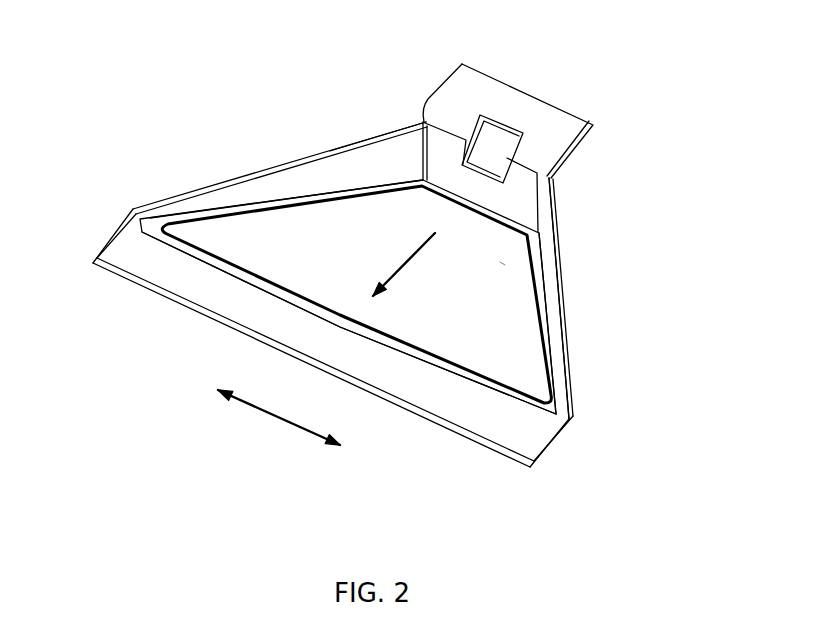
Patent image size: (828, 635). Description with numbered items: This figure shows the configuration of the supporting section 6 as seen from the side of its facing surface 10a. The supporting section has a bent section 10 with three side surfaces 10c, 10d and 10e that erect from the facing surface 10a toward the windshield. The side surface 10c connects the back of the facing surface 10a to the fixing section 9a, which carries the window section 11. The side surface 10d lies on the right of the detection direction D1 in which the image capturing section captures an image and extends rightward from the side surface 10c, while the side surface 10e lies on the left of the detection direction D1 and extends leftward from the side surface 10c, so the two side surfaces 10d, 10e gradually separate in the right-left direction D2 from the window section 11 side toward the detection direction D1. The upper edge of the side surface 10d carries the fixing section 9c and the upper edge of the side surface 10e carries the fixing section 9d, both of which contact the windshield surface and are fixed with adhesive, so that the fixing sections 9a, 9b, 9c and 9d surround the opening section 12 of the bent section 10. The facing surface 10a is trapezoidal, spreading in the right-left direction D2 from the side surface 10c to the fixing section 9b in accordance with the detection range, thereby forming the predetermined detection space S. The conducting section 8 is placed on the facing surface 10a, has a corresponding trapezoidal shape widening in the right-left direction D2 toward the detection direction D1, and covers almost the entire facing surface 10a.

The supporting section 6 is at (175, 138).
The conducting section 8 is at (290, 237).
The fixing section 9a is at (555, 124).
The fixing section 9b is at (205, 302).
The fixing section 9c is at (282, 160).
The fixing section 9d is at (553, 280).
The bent section 10 is at (445, 191).
The facing surface 10a is at (153, 240).
The side surface 10c is at (442, 153).
The side surface 10d is at (325, 177).
The side surface 10e is at (539, 232).
The window section 11 is at (488, 173).
The opening section 12 is at (356, 137).
The detection space S is at (503, 262).
The detection direction D1 is at (408, 264).
The right-left direction D2 is at (279, 420).